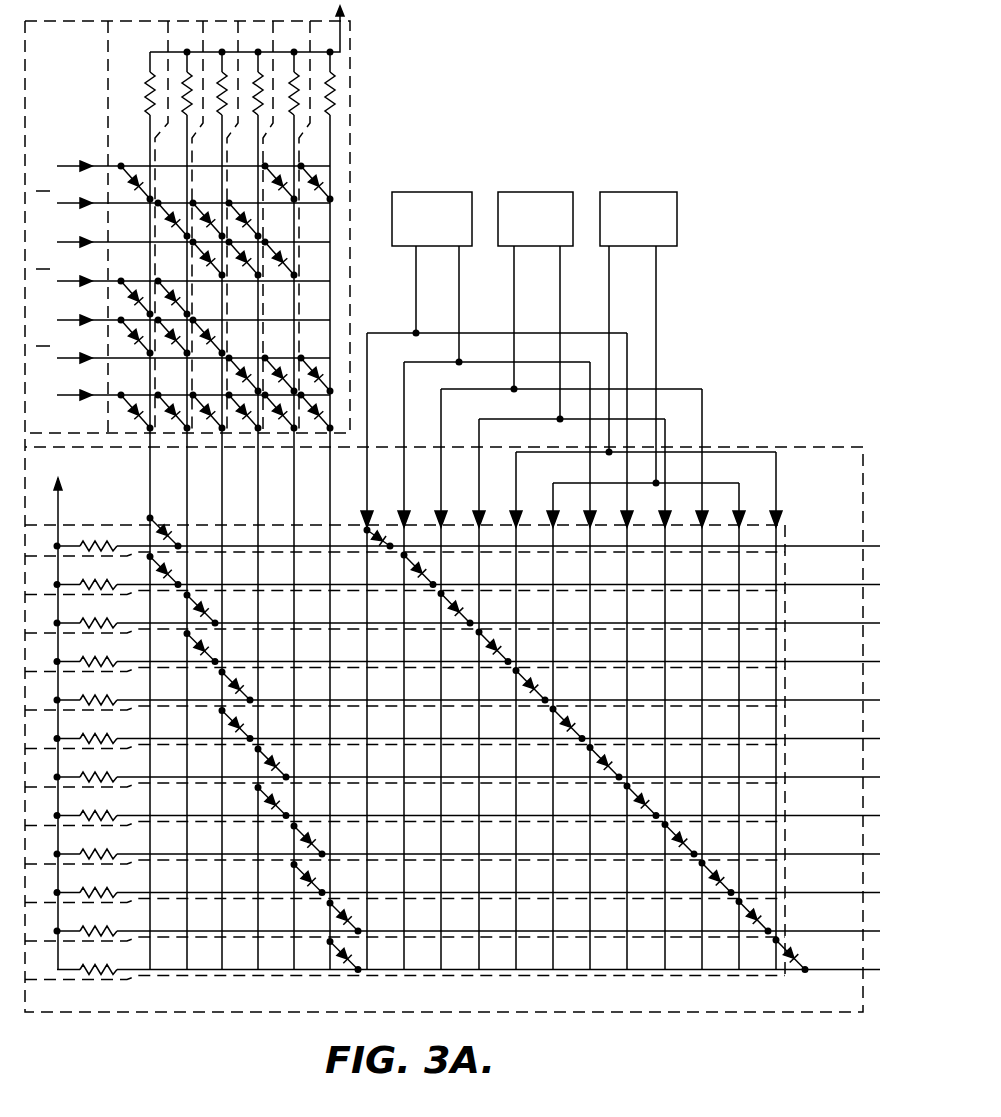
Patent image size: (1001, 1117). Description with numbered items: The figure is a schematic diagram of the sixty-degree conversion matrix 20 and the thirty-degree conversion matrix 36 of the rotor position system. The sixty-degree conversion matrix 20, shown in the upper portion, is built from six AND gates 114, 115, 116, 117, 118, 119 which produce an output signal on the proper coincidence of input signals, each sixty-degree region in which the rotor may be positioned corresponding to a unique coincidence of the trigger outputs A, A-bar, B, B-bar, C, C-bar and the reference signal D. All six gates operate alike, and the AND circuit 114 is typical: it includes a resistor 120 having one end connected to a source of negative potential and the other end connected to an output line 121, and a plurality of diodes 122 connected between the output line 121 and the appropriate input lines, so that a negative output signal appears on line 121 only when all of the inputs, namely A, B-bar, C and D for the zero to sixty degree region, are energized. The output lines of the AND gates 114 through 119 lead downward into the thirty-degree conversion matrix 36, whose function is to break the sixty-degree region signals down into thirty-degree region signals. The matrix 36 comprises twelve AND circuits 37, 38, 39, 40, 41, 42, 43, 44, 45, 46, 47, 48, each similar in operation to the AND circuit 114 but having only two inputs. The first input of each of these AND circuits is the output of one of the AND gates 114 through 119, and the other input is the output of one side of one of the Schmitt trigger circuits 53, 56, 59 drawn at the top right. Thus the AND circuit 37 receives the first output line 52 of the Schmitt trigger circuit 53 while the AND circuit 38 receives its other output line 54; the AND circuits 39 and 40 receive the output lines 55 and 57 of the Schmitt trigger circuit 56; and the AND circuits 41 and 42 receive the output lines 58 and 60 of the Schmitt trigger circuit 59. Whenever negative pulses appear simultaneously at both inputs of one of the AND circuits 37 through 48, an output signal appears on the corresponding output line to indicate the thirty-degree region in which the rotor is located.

The 60° conversion matrix 20 is at (350, 163).
The 30° conversion matrix 36 is at (672, 1013).
The AND circuit 37 is at (50, 549).
The AND circuit 38 is at (50, 588).
The AND circuit 39 is at (50, 626).
The AND circuit 40 is at (50, 664).
The AND circuit 41 is at (50, 703).
The AND circuit 42 is at (50, 742).
The AND circuit 43 is at (50, 780).
The AND circuit 44 is at (50, 818).
The AND circuit 45 is at (50, 857).
The AND circuit 46 is at (50, 896).
The AND circuit 47 is at (50, 934).
The AND circuit 48 is at (50, 972).
The first output line 52 is at (416, 291).
The Schmitt trigger circuit 53 is at (430, 192).
The output line 54 is at (459, 270).
The output line 55 is at (514, 302).
The Schmitt trigger circuit 56 is at (538, 192).
The output line 57 is at (560, 282).
The output line 58 is at (609, 302).
The Schmitt trigger circuit 59 is at (641, 192).
The output line 60 is at (656, 287).
The AND gate 114 is at (148, 46).
The AND gate 115 is at (196, 46).
The AND gate 116 is at (230, 46).
The AND gate 117 is at (265, 46).
The AND gate 118 is at (302, 46).
The AND gate 119 is at (336, 46).
The resistor 120 is at (150, 112).
The output line 121 is at (148, 497).
The diodes 122 is at (133, 178).